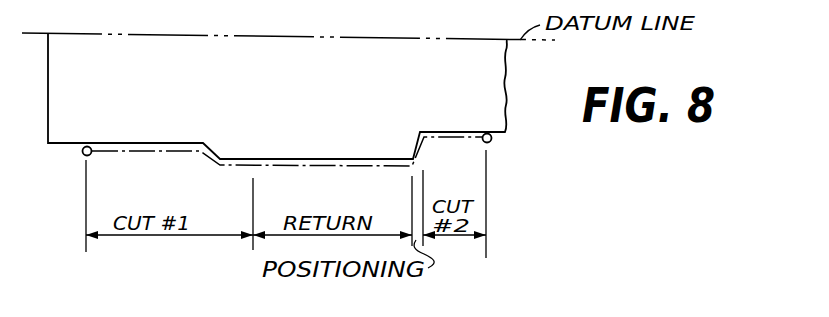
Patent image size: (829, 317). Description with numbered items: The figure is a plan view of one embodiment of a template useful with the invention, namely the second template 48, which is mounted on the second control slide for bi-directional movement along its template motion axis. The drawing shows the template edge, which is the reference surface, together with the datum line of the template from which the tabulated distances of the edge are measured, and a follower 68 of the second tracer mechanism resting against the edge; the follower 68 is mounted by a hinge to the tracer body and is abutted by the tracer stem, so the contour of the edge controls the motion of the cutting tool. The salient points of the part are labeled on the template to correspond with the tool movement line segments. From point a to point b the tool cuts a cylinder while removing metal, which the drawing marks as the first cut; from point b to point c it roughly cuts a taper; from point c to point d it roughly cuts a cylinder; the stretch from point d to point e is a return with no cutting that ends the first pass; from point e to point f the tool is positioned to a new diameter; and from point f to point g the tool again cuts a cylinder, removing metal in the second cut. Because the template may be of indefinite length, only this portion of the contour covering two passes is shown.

The second template 48 is at (508, 78).
The follower 68 is at (82, 151).
The point a is at (65, 170).
The point b is at (201, 157).
The point c is at (213, 167).
The point d is at (258, 168).
The point e is at (412, 170).
The point f is at (428, 138).
The point g is at (490, 141).